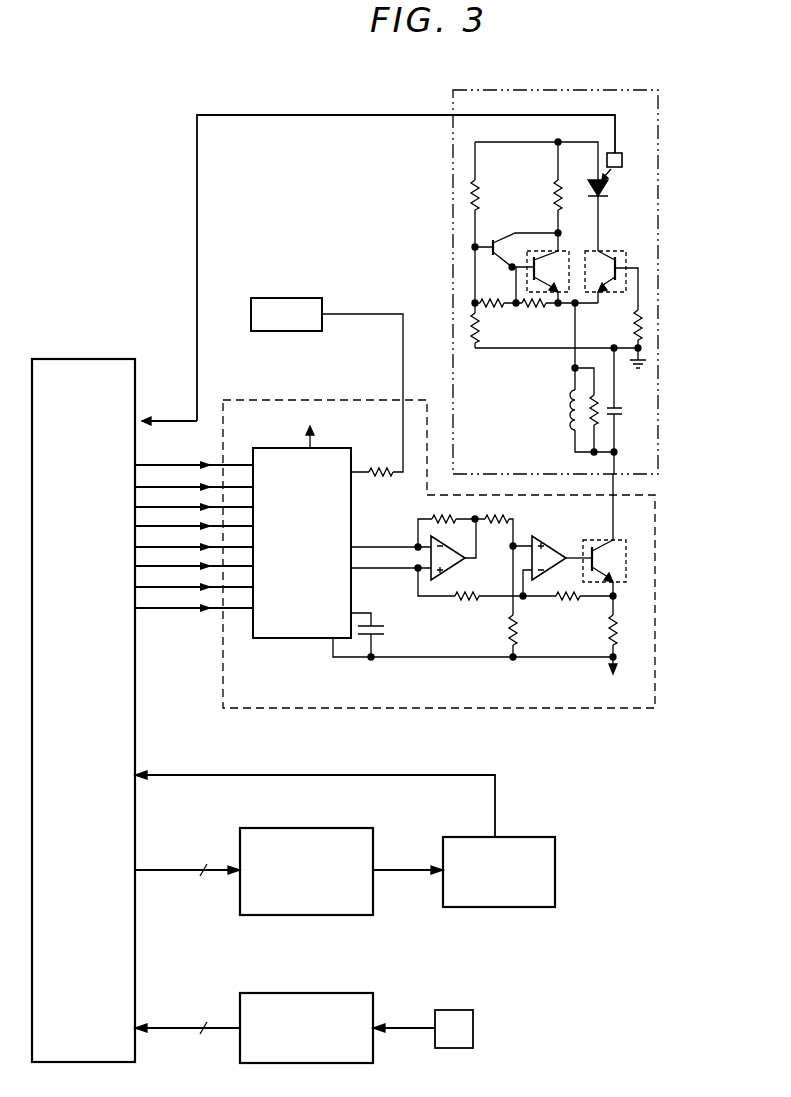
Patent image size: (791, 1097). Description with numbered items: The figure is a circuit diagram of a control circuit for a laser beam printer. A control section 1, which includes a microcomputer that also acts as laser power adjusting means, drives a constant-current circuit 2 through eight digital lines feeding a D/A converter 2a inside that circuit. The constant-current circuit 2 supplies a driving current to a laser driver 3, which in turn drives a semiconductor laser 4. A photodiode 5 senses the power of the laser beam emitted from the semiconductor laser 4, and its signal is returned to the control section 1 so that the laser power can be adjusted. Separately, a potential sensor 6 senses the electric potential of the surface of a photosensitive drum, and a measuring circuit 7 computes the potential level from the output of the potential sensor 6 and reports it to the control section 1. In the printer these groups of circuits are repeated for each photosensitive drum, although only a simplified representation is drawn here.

The control section 1 is at (96, 357).
The constant-current circuit 2 is at (404, 606).
The D/A converter 2a is at (275, 640).
The laser driver 3 is at (404, 498).
The semiconductor laser 4 is at (610, 196).
The photodiode 5 is at (620, 152).
The potential sensor 6 is at (453, 1008).
The measuring circuit 7 is at (340, 993).